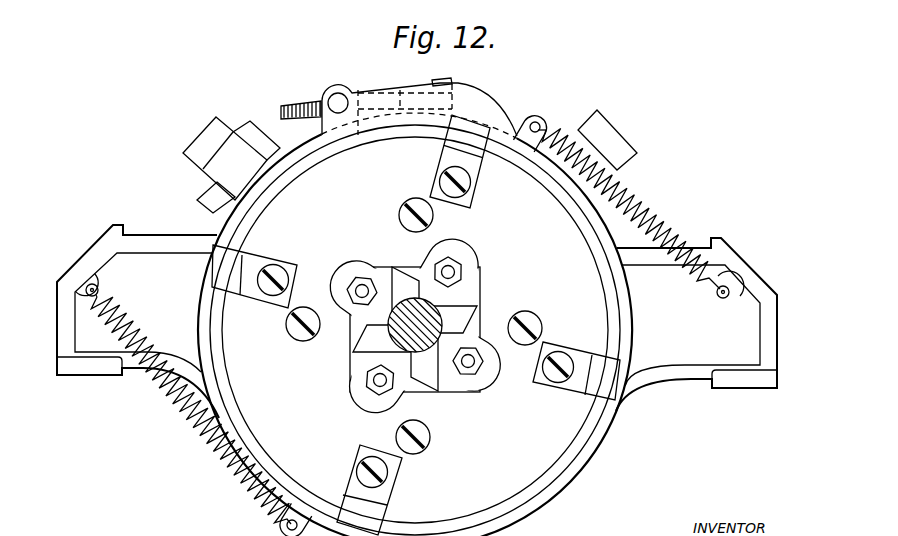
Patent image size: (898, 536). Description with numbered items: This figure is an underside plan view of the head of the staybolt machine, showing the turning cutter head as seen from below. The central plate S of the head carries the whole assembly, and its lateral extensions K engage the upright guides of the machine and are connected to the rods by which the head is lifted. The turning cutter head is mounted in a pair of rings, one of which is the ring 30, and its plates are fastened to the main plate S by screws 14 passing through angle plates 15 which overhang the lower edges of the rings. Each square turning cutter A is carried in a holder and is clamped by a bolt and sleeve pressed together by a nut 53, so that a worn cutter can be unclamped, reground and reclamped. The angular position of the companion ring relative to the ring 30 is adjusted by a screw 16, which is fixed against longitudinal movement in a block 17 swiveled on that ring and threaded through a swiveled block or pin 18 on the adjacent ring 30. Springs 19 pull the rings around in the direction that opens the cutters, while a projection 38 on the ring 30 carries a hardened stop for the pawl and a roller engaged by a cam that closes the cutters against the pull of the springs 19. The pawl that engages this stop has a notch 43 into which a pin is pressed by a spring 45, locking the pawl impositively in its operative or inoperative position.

The screws 14 is at (556, 381).
The angle plates 15 is at (578, 355).
The screw 16 is at (310, 105).
The block 17 is at (434, 80).
The swiveled block or pin 18 is at (352, 80).
The springs 19 is at (655, 216).
The ring 30 is at (294, 141).
The projection 38 is at (225, 158).
The notch 43 is at (201, 206).
The spring 45 is at (209, 132).
The nut 53 is at (455, 272).
The turning cutter A is at (455, 332).
The lateral extensions K is at (417, 321).
The central plate S is at (607, 438).